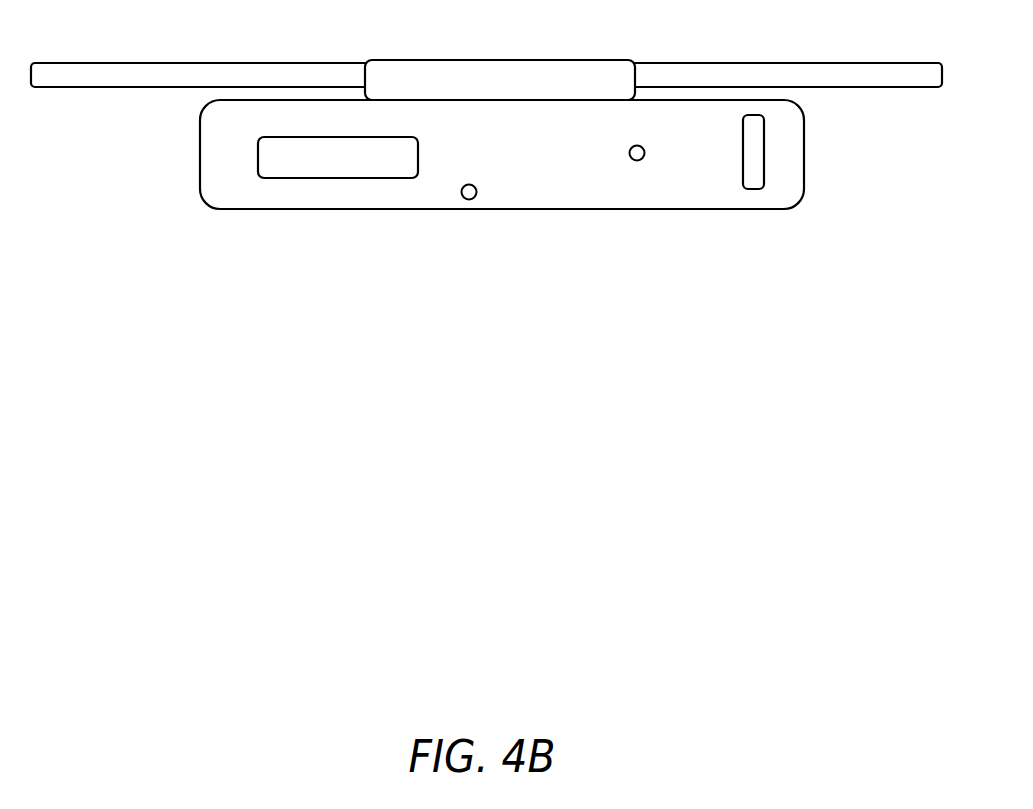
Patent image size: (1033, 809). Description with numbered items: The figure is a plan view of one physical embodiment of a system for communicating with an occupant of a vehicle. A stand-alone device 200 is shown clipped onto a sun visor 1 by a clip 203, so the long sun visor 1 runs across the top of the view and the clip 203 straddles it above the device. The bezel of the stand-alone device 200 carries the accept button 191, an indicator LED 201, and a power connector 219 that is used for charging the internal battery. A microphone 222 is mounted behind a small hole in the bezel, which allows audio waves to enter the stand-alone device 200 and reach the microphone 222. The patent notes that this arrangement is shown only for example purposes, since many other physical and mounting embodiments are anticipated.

The sun visor 1 is at (132, 87).
The clip 203 is at (497, 60).
The stand-alone device 200 is at (498, 208).
The accept button 191 is at (362, 178).
The microphone 222 is at (469, 200).
The indicator LED 201 is at (635, 161).
The power connector 219 is at (752, 189).